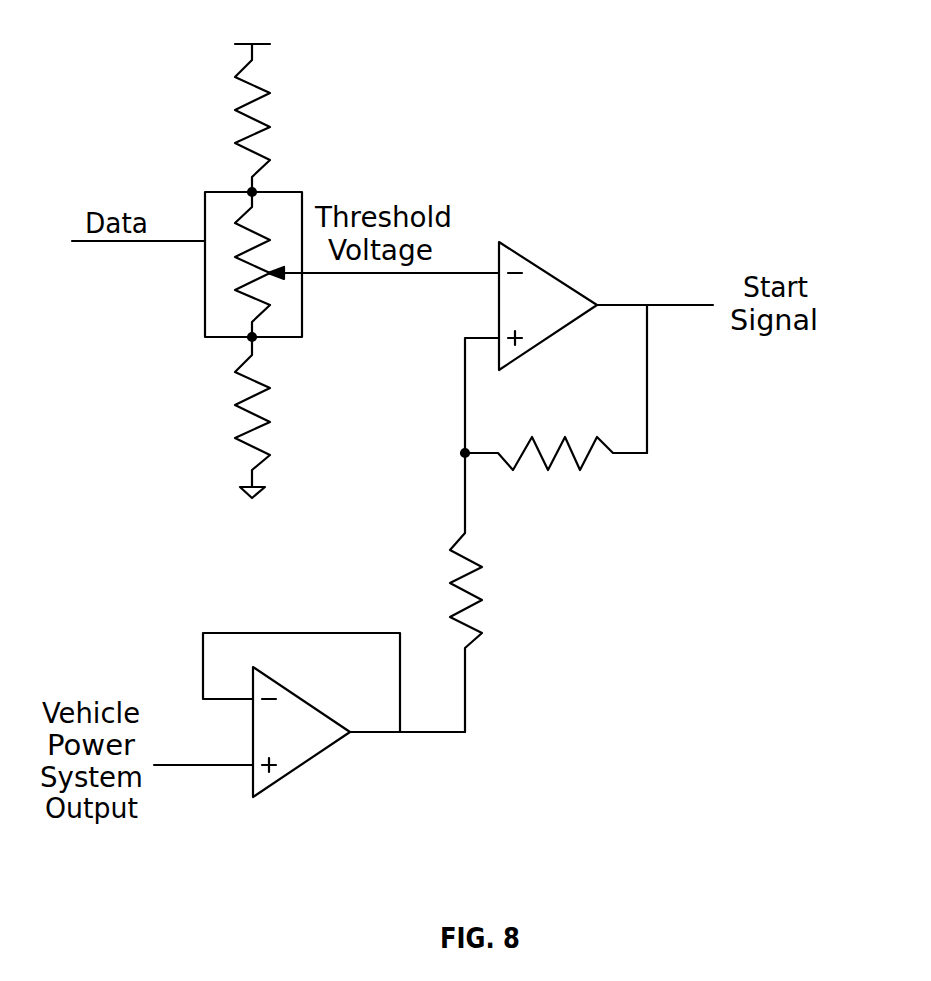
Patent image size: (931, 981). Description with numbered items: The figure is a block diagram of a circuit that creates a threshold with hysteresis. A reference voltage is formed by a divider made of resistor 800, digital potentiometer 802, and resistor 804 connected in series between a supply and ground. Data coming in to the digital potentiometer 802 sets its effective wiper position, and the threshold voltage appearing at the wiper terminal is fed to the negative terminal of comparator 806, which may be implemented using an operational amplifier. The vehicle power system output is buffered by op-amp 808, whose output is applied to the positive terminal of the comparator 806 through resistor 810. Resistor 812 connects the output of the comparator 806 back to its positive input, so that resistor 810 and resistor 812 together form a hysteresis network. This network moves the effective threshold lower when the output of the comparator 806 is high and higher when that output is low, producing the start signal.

The resistor 800 is at (243, 105).
The digital potentiometer 802 is at (205, 322).
The resistor 804 is at (242, 440).
The comparator 806 is at (530, 262).
The op-amp 808 is at (300, 765).
The resistor 810 is at (475, 628).
The resistor 812 is at (587, 463).